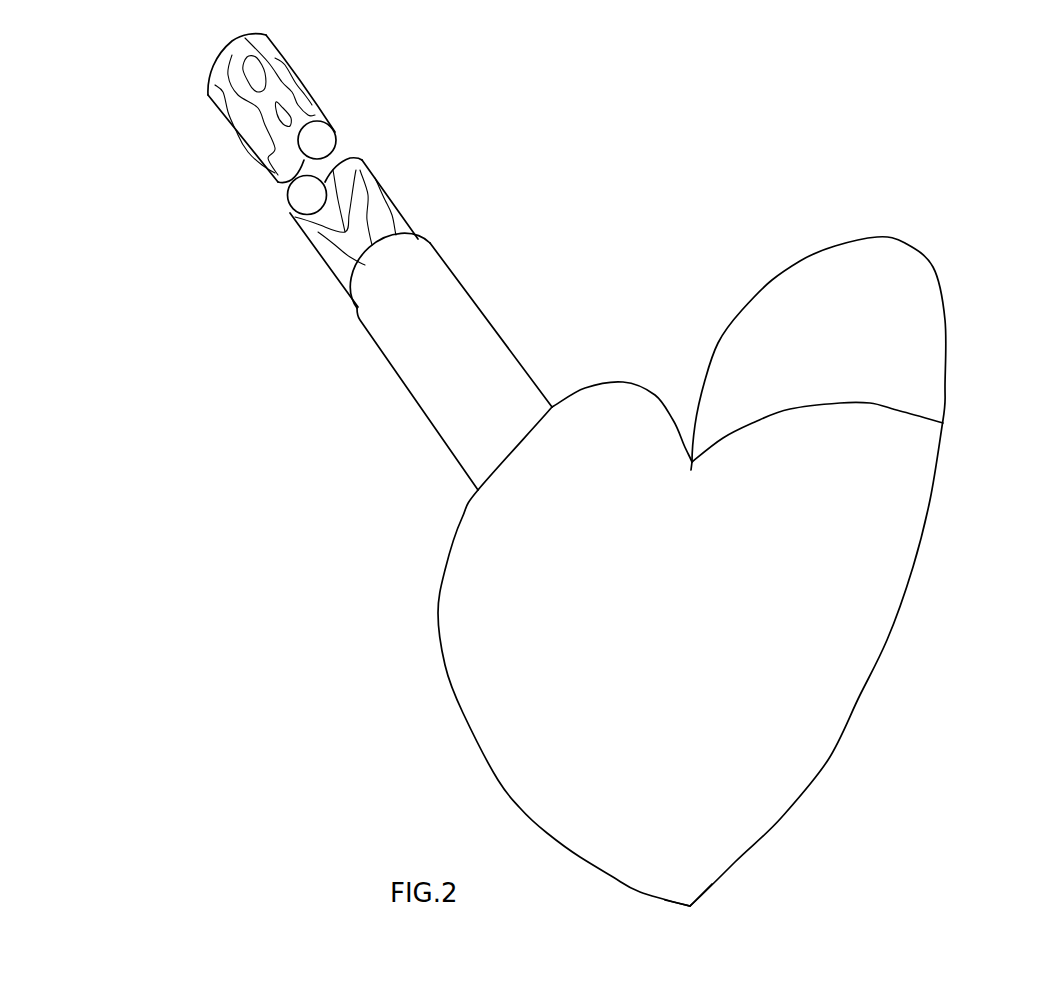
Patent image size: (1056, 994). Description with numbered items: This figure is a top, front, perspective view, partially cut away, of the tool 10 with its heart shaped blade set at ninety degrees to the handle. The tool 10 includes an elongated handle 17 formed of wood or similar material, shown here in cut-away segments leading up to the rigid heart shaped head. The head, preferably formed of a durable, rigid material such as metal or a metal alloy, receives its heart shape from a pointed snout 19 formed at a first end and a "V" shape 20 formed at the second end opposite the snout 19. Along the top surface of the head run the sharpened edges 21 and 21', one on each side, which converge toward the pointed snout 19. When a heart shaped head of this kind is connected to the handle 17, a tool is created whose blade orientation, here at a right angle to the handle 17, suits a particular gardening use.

The tool 10 is at (365, 422).
The elongated handle 17 is at (317, 237).
The pointed snout 19 is at (690, 906).
The "V" shape 20 is at (943, 423).
The sharpened edge 21 is at (835, 571).
The sharpened edge 21' is at (461, 644).